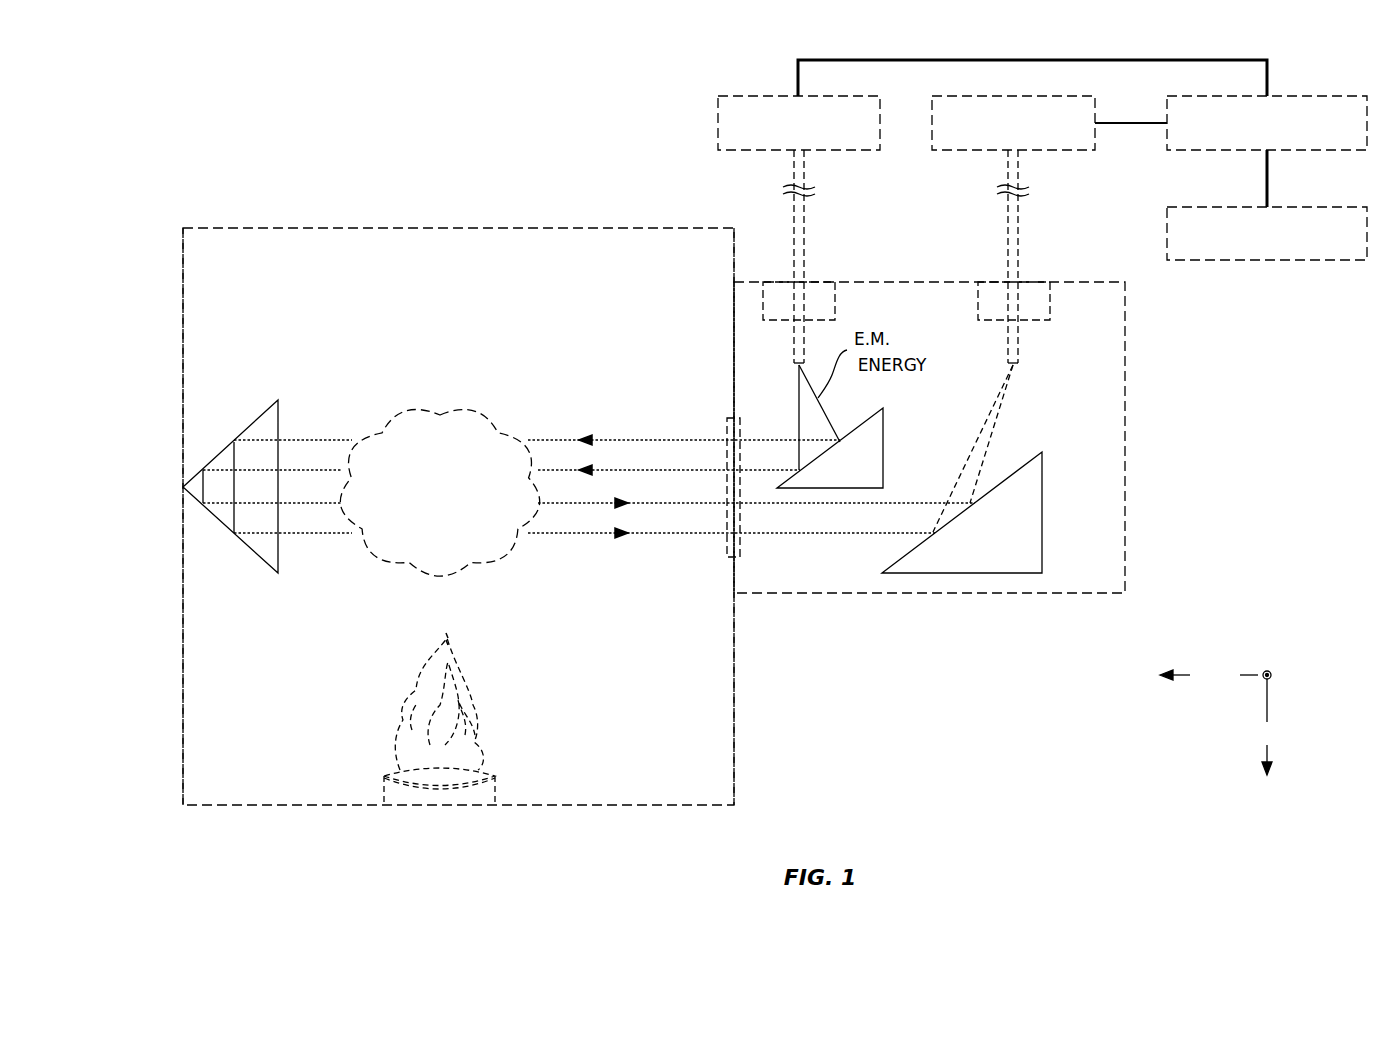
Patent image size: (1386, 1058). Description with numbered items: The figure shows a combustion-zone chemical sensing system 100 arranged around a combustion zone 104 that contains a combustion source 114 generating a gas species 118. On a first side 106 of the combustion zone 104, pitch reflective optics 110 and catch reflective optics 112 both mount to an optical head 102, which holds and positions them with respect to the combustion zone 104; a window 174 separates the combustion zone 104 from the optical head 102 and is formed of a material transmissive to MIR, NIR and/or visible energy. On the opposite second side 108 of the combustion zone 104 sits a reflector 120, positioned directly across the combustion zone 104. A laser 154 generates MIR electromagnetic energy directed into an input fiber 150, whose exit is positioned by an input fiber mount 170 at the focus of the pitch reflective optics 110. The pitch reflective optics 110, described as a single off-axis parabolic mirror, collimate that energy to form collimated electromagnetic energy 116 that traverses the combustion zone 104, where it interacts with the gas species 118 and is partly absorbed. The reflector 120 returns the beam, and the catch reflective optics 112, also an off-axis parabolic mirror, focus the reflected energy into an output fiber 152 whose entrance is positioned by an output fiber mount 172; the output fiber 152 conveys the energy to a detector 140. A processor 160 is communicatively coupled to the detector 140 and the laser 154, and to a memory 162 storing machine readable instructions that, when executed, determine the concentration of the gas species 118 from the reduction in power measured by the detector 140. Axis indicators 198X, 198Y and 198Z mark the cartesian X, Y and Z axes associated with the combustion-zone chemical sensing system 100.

The combustion-zone chemical sensing system 100 is at (273, 150).
The optical head 102 is at (1160, 407).
The combustion zone 104 is at (535, 227).
The first side 106 is at (736, 703).
The second side 108 is at (181, 701).
The pitch reflective optics 110 is at (886, 430).
The catch reflective optics 112 is at (1044, 508).
The combustion source 114 is at (481, 743).
The collimated electromagnetic energy 116 is at (632, 438).
The gas species 118 is at (439, 493).
The reflector 120 is at (258, 418).
The detector 140 is at (1013, 123).
The input fiber 150 is at (806, 256).
The output fiber 152 is at (1020, 256).
The laser 154 is at (799, 123).
The processor 160 is at (1267, 123).
The memory 162 is at (1267, 233).
The input fiber mount 170 is at (836, 299).
The output fiber mount 172 is at (1051, 299).
The window 174 is at (727, 432).
The axis indicator 198X is at (1268, 727).
The axis indicator 198Y is at (1265, 679).
The axis indicator 198Z is at (1209, 675).